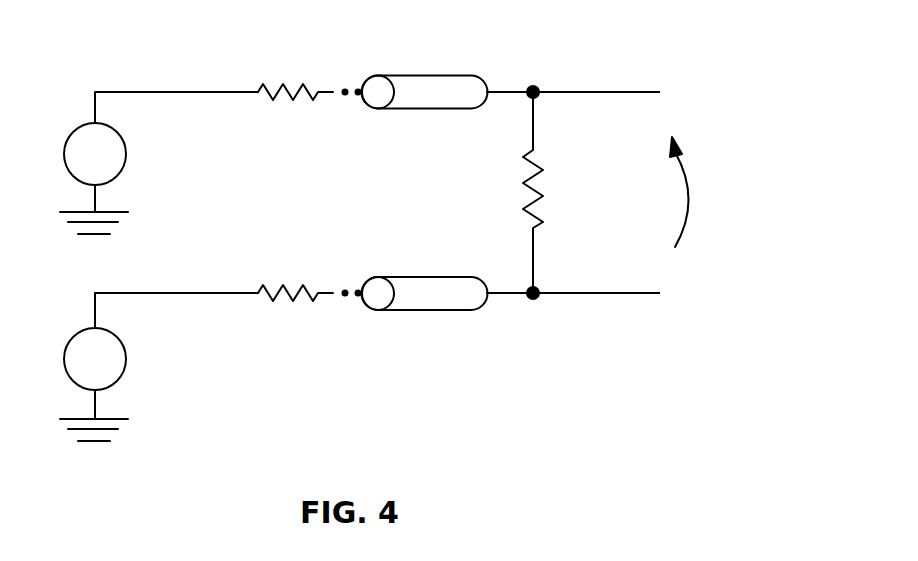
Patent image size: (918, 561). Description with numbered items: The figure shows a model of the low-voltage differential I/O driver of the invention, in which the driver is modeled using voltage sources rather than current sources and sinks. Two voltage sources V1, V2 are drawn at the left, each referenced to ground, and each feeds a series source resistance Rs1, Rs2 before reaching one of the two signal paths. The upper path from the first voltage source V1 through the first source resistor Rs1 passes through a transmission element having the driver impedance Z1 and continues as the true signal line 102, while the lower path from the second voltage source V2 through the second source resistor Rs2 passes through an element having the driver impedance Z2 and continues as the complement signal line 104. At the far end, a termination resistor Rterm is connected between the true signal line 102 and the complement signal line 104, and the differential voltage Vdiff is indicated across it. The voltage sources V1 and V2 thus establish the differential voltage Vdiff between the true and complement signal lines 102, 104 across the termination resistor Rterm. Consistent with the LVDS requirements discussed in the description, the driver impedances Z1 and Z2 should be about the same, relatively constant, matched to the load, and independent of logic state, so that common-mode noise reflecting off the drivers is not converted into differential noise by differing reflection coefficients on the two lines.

The true signal line 102 is at (613, 92).
The complement signal line 104 is at (643, 294).
The voltage source V1 is at (138, 163).
The voltage source V2 is at (138, 367).
The source resistor Rs1 is at (295, 71).
The source resistor Rs2 is at (295, 316).
The driver impedance Z1 is at (498, 31).
The driver impedance Z2 is at (498, 340).
The termination resistor Rterm is at (566, 192).
The differential voltage Vdiff is at (714, 192).